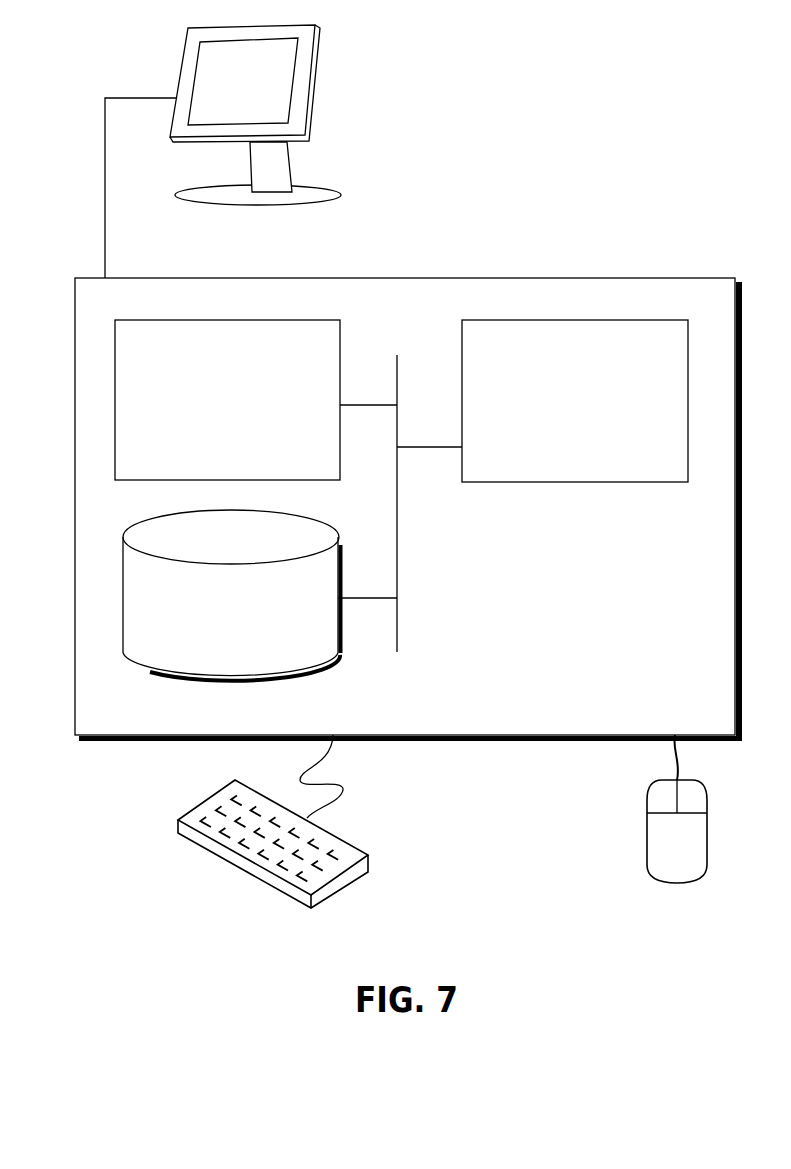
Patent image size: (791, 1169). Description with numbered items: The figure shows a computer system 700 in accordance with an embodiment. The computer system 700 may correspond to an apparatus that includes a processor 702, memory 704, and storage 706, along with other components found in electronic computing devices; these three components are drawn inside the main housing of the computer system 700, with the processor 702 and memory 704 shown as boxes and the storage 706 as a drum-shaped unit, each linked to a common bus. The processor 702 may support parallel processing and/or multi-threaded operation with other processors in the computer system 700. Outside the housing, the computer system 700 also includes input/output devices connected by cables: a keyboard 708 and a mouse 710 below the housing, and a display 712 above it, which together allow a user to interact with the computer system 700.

The computer system 700 is at (452, 257).
The processor 702 is at (598, 414).
The memory 704 is at (248, 412).
The storage 706 is at (255, 624).
The keyboard 708 is at (195, 843).
The mouse 710 is at (697, 854).
The display 712 is at (223, 151).